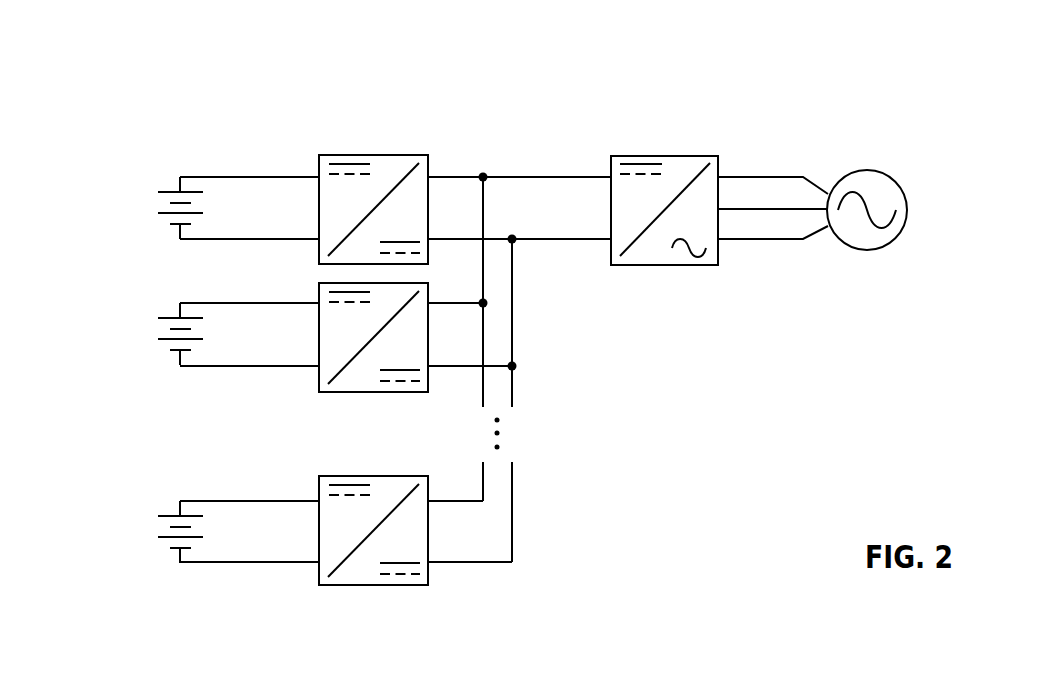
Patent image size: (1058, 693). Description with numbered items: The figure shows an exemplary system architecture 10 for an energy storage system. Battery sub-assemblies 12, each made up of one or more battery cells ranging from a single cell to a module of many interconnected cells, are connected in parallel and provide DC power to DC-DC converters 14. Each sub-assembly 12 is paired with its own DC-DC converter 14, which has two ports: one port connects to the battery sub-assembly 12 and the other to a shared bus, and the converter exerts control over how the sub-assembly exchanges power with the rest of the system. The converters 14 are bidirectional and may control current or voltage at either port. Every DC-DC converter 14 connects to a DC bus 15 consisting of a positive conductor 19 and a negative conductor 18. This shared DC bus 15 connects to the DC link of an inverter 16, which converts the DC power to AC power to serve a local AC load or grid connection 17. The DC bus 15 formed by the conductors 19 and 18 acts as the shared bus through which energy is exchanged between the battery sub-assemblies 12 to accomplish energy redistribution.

The system architecture 10 is at (492, 76).
The battery sub-assembly 12 is at (128, 203).
The DC-DC converter 14 is at (367, 155).
The DC bus 15 is at (526, 342).
The inverter 16 is at (683, 265).
The local AC load or grid connection 17 is at (880, 172).
The negative conductor 18 is at (548, 240).
The positive conductor 19 is at (565, 177).